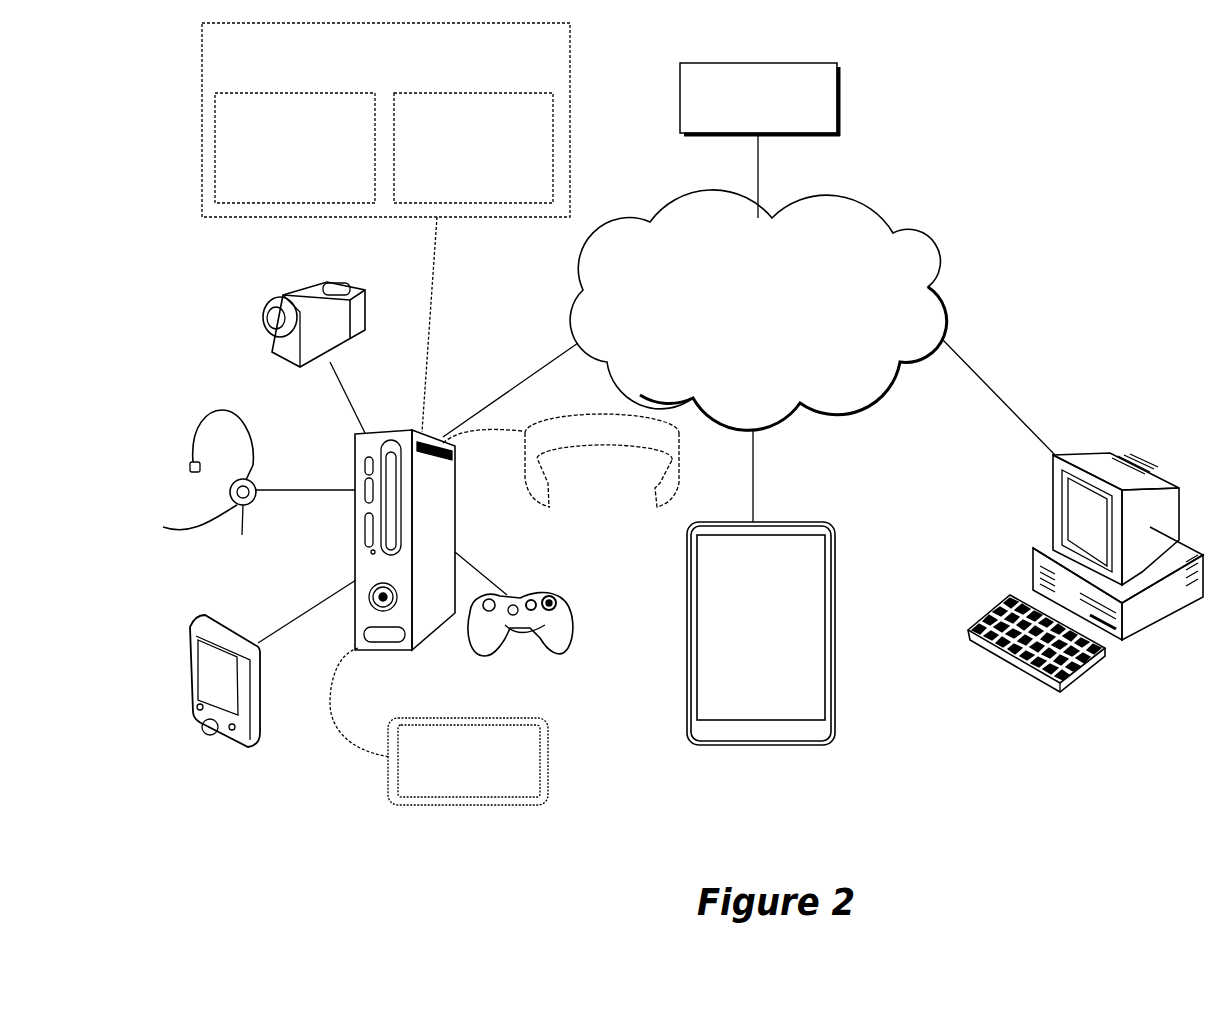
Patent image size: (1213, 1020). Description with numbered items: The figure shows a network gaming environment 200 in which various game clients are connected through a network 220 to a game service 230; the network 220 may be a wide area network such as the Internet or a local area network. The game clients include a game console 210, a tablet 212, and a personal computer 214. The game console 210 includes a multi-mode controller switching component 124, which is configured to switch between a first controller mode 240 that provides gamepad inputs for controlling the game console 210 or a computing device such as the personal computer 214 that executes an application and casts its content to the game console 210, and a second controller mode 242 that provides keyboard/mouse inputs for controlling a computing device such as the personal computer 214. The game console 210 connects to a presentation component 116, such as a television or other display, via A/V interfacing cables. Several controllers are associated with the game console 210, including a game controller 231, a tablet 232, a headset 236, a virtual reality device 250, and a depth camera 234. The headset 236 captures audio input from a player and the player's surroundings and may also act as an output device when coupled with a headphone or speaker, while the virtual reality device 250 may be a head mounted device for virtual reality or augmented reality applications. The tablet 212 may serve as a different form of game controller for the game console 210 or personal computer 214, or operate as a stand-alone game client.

The multi-mode controller switching component 124 is at (534, 86).
The first controller mode 240 is at (350, 189).
The second controller mode 242 is at (530, 189).
The game service 230 is at (797, 63).
The network 220 is at (835, 200).
The network gaming environment 200 is at (1000, 164).
The game console 210 is at (455, 478).
The depth camera 234 is at (340, 283).
The headset 236 is at (232, 434).
The tablet 232 is at (262, 728).
The game controller 231 is at (527, 592).
The virtual reality device 250 is at (572, 498).
The presentation component 116 is at (550, 740).
The tablet 212 is at (835, 620).
The personal computer 214 is at (1143, 460).